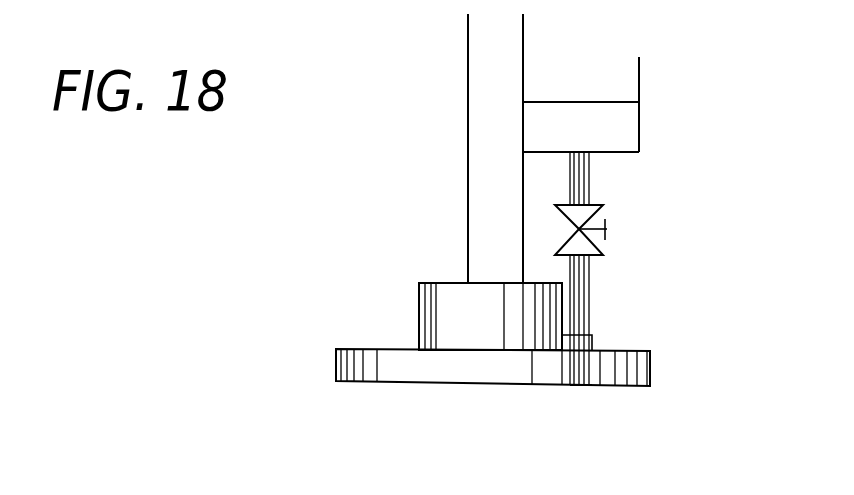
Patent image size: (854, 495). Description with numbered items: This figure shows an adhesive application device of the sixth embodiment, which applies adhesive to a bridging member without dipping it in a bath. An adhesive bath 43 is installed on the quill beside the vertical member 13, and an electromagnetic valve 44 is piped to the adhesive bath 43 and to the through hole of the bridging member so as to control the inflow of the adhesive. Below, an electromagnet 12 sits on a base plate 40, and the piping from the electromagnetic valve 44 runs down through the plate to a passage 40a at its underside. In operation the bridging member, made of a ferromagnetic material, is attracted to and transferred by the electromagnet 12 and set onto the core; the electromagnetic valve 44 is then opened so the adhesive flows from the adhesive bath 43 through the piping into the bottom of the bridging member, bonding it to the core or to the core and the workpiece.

The pipe 13 is at (490, 114).
The adhesive bath 43 is at (617, 128).
The electromagnetic valve 44 is at (608, 228).
The electromagnet 12 is at (455, 298).
The base plate 40 is at (630, 370).
The plate passage 40a is at (580, 385).